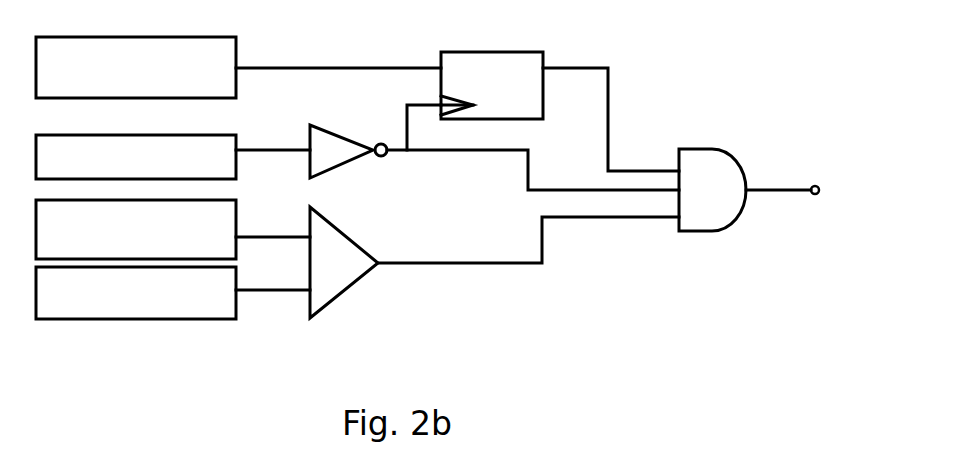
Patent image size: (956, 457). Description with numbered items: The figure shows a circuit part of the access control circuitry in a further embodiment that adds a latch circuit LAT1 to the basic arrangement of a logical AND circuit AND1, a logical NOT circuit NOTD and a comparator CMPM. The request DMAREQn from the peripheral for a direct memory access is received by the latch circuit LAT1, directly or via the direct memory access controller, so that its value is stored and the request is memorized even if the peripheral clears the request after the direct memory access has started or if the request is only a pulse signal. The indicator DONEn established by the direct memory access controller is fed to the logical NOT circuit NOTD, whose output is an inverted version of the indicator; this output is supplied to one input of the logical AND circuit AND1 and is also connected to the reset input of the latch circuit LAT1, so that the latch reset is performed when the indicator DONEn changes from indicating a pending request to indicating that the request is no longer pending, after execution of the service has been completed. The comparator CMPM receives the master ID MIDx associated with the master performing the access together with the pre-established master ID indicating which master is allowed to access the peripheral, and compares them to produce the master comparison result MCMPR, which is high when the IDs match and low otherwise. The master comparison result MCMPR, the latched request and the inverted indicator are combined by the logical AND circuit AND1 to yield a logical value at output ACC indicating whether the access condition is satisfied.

The request DMAREQn is at (238, 67).
The indicator DONEn is at (173, 157).
The master ID MIDx is at (173, 229).
The logical NOT circuit NOTD is at (362, 163).
The comparator CMPM is at (347, 297).
The latch circuit LAT1 is at (507, 60).
The master comparison result MCMPR is at (502, 267).
The logical AND circuit AND1 is at (728, 150).
The access signal output ACC is at (810, 170).